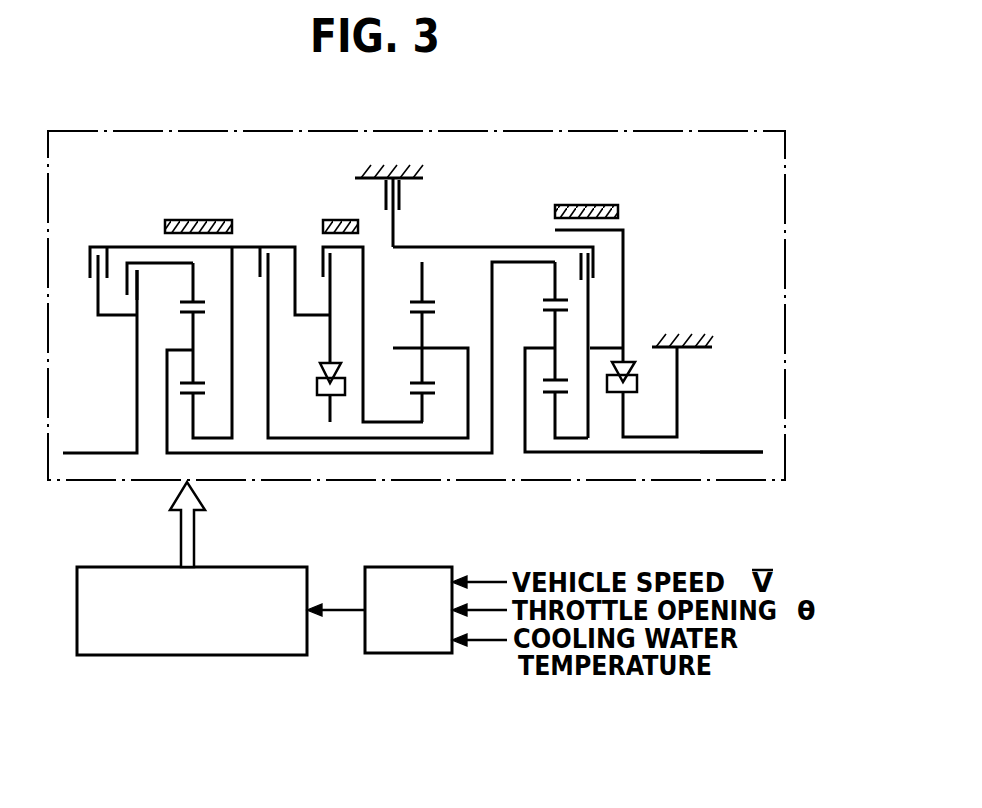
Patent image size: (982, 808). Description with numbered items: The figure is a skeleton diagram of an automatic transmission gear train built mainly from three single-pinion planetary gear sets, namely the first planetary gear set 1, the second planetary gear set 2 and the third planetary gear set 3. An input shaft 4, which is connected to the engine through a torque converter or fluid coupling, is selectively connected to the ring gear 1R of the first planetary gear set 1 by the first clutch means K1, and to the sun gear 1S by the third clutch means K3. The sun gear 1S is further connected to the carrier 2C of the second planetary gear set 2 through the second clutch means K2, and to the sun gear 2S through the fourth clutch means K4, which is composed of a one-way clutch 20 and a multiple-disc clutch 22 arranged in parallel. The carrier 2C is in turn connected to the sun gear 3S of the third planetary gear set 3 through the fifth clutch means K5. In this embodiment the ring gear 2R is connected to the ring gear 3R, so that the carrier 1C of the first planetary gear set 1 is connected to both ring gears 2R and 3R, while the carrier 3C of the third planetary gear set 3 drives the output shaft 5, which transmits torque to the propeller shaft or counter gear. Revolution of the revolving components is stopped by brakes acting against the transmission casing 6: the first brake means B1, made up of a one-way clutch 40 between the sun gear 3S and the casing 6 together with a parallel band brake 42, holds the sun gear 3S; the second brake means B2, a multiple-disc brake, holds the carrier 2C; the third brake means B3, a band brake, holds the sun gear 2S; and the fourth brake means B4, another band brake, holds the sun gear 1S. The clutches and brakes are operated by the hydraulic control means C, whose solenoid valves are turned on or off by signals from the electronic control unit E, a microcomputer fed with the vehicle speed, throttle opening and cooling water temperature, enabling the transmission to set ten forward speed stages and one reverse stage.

The first planetary gear set 1 is at (336, 387).
The second planetary gear set 2 is at (425, 397).
The third planetary gear set 3 is at (637, 397).
The input shaft 4 is at (98, 452).
The output shaft 5 is at (713, 452).
The transmission casing 6 is at (423, 172).
The one-way clutch 20 is at (318, 383).
The multiple-disc clutch 22 is at (322, 258).
The one-way clutch 40 is at (627, 362).
The band brake 42 is at (600, 205).
The first brake means B1 is at (645, 296).
The second brake means B2 is at (386, 192).
The third brake means B3 is at (340, 213).
The fourth brake means B4 is at (198, 212).
The first clutch means K1 is at (160, 281).
The second clutch means K2 is at (360, 329).
The third clutch means K3 is at (207, 268).
The fourth clutch means K4 is at (342, 270).
The fifth clutch means K5 is at (600, 345).
The ring gear of first planetary gear set 1R is at (201, 287).
The carrier of first planetary gear set 1C is at (355, 357).
The sun gear of first planetary gear set 1S is at (206, 343).
The ring gear of second planetary gear set 2R is at (434, 287).
The carrier of second planetary gear set 2C is at (442, 347).
The sun gear of second planetary gear set 2S is at (433, 402).
The ring gear of third planetary gear set 3R is at (540, 286).
The carrier of third planetary gear set 3C is at (637, 381).
The sun gear of third planetary gear set 3S is at (565, 409).
The hydraulic control means C is at (184, 655).
The electronic control unit E is at (406, 653).